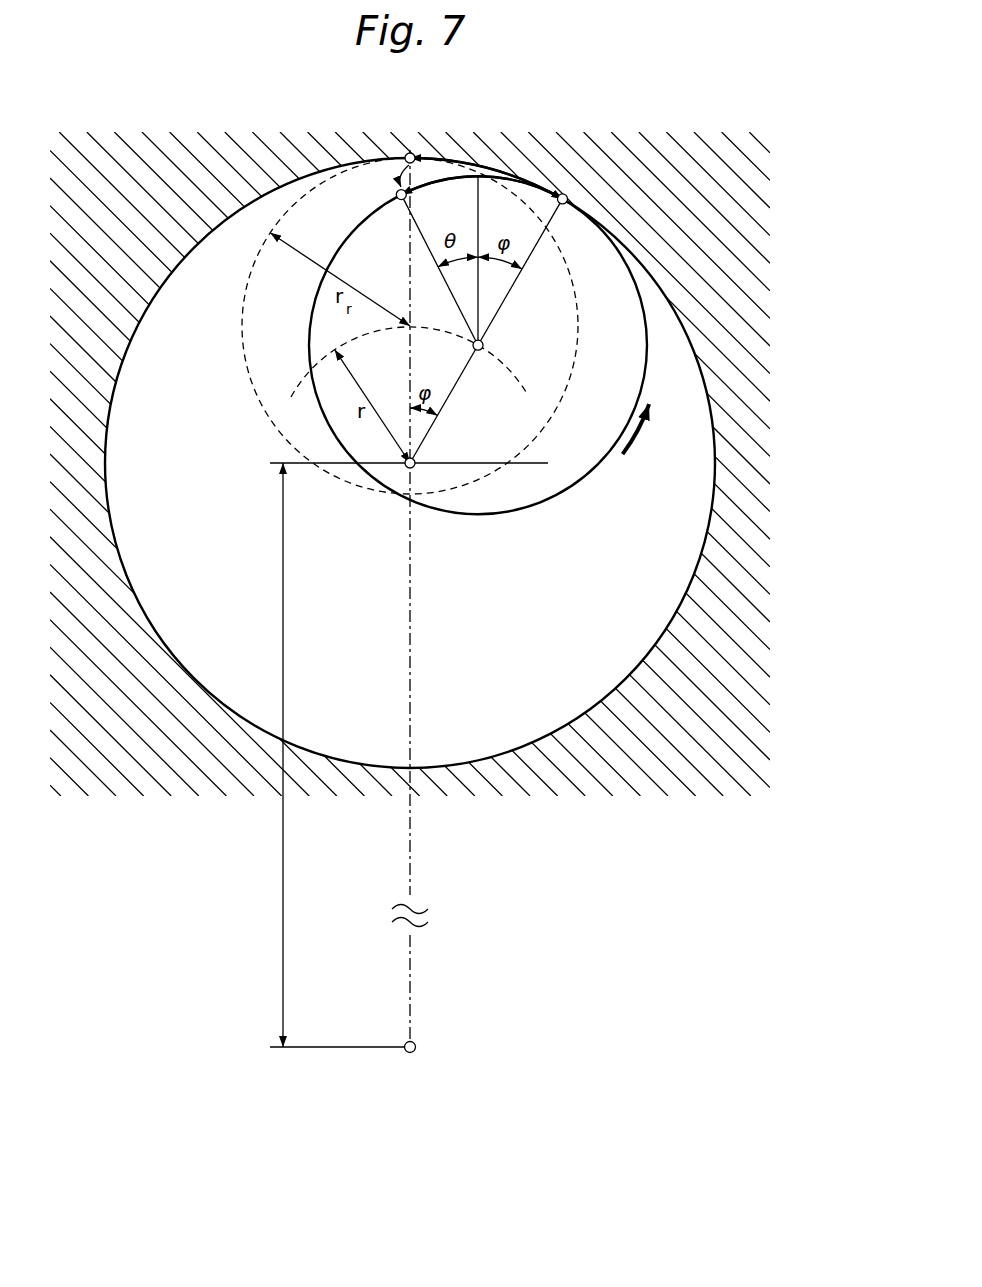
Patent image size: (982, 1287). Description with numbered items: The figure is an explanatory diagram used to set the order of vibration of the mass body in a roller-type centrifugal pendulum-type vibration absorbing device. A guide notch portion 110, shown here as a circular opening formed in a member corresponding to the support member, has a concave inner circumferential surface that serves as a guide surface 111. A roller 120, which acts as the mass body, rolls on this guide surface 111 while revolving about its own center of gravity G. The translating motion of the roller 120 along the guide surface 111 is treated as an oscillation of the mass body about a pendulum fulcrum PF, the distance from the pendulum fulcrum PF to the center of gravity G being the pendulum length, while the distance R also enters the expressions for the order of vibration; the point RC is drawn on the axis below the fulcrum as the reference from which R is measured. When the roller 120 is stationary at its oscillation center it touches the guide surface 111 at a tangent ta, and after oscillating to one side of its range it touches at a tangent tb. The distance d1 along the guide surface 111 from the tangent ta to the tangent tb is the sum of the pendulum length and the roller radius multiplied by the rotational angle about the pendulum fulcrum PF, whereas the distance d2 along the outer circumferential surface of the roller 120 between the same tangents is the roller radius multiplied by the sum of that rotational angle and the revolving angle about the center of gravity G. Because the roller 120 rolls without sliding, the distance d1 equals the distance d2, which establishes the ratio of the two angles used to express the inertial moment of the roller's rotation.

The guide notch portion 110 is at (494, 598).
The guide surface 111 is at (157, 293).
The roller 120 is at (594, 471).
The center of gravity G is at (482, 352).
The pendulum fulcrum PF is at (408, 469).
The rotation center RC is at (415, 1052).
The distance R is at (269, 755).
The tangent ta is at (396, 193).
The tangent tb is at (565, 194).
The distance d1 is at (510, 178).
The distance d2 is at (446, 160).